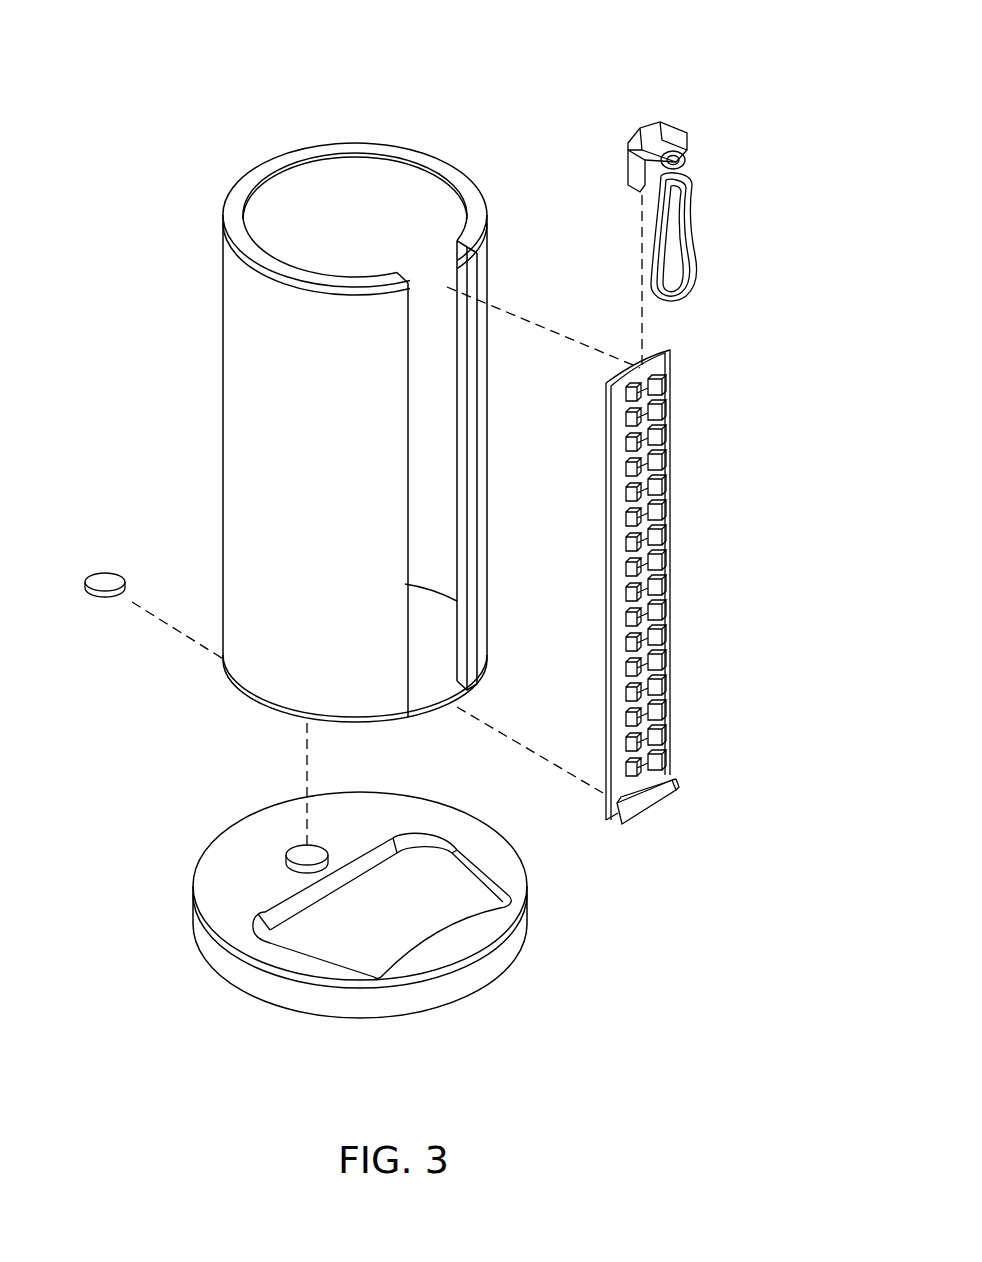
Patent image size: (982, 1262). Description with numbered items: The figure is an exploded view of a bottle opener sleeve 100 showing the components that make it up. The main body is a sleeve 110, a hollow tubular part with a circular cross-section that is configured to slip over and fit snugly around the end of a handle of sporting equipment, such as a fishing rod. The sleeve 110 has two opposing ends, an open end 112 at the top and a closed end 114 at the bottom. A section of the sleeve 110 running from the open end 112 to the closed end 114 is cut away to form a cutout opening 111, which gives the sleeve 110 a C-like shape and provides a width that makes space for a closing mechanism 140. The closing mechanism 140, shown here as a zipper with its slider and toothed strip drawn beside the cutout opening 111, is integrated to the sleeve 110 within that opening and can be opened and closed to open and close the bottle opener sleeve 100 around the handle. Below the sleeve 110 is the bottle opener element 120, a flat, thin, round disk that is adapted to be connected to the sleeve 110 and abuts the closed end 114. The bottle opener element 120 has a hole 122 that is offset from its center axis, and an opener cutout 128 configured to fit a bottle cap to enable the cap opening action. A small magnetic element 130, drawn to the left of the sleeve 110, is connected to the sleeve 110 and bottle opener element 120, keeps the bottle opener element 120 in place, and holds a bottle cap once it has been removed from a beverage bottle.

The bottle opener sleeve 100 is at (178, 72).
The sleeve 110 is at (223, 434).
The cutout opening 111 is at (467, 640).
The open end 112 is at (254, 170).
The closed end 114 is at (267, 710).
The bottle opener element 120 is at (195, 866).
The hole 122 is at (283, 858).
The opener cutout 128 is at (485, 866).
The magnetic element 130 is at (93, 597).
The closing mechanism 140 is at (670, 395).